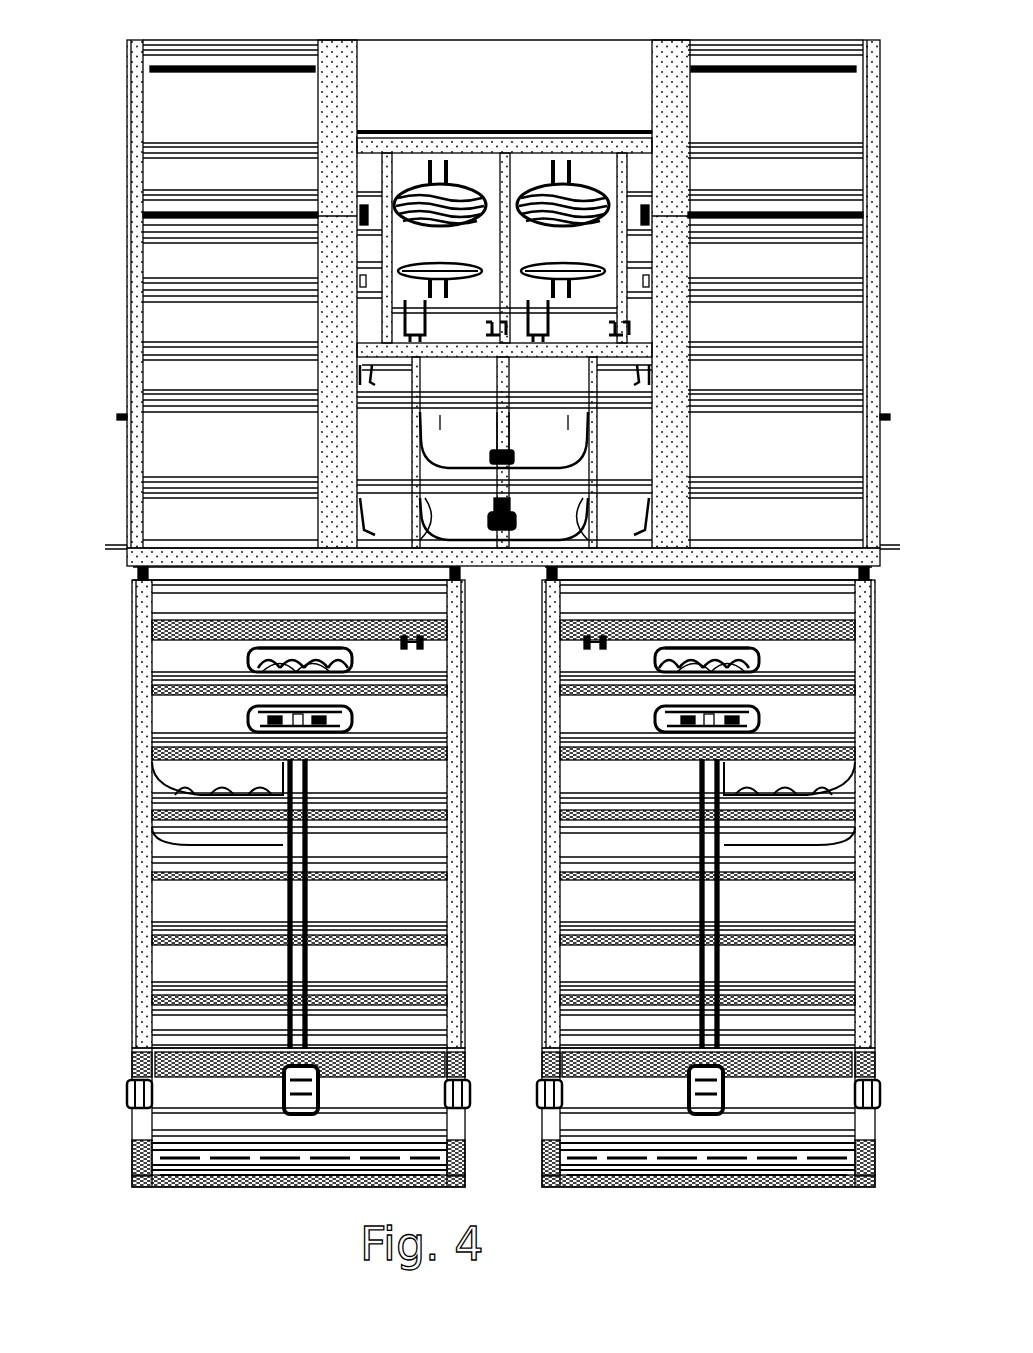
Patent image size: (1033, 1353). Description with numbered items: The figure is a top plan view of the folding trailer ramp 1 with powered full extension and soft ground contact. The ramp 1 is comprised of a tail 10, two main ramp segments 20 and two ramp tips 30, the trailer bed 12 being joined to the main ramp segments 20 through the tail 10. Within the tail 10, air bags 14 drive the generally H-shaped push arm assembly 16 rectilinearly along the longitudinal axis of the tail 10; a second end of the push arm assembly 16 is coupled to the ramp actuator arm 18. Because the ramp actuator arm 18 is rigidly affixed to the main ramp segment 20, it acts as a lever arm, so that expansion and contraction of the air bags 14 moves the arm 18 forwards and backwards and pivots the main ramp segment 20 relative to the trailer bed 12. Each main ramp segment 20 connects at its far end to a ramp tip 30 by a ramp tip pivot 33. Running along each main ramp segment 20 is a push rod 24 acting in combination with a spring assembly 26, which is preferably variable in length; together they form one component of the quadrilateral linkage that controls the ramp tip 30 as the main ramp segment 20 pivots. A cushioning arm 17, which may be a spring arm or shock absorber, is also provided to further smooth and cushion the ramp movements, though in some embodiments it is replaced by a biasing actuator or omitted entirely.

The folding trailer ramp 1 is at (85, 37).
The tail 10 is at (378, 38).
The trailer bed 12 is at (127, 130).
The air bags 14 is at (485, 183).
The push arm assembly 16 is at (500, 416).
The cushioning arm 17 is at (505, 417).
The ramp actuator arm 18 is at (590, 643).
The main ramp segment 20 is at (130, 697).
The push rod 24 is at (705, 898).
The spring assembly 26 is at (588, 710).
The ramp tip 30 is at (130, 1148).
The ramp tip pivot 33 is at (555, 1170).